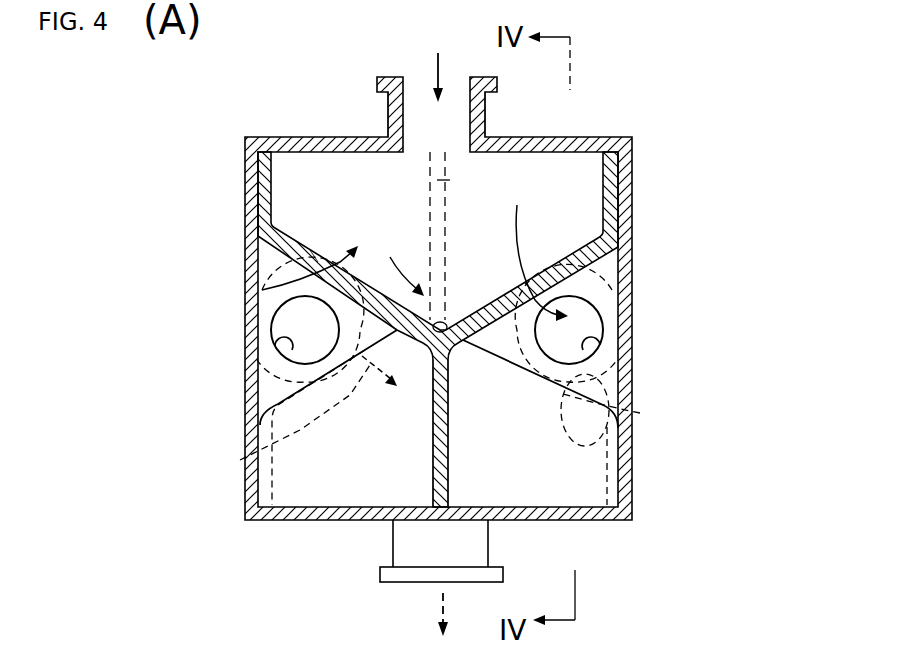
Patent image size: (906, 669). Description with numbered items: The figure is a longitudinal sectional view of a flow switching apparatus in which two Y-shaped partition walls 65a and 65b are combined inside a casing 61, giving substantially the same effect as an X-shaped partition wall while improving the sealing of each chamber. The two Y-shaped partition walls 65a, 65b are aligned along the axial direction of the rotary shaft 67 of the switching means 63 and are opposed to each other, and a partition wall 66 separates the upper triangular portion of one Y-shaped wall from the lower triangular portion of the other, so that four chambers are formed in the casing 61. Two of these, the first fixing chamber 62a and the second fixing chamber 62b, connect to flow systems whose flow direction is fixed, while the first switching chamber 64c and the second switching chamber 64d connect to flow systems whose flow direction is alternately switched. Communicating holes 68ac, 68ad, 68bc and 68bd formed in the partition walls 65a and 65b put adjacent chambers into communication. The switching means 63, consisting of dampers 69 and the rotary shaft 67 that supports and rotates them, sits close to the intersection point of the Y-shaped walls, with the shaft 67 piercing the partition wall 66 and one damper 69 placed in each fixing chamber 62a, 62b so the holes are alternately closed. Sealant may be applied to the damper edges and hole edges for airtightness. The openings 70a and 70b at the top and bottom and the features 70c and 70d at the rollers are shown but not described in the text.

The casing 61 is at (627, 217).
The first fixing chamber 62a is at (477, 233).
The second fixing chamber 62b is at (356, 485).
The switching means 63 is at (396, 258).
The first switching chamber 64c is at (268, 322).
The second switching chamber 64d is at (608, 315).
The Y-shaped partition wall 65a is at (633, 262).
The Y-shaped partition wall 65b is at (445, 180).
The partition wall 66 is at (603, 173).
The rotary shaft 67 is at (447, 322).
The communicating hole 68ac is at (262, 290).
The communicating hole 68ad is at (560, 225).
The communicating hole 68bc is at (240, 460).
The communicating hole 68bd is at (640, 413).
The damper 69 is at (323, 252).
The inlet pipe 70a is at (392, 108).
The outlet pipe 70b is at (490, 546).
The left roller shaft 70c is at (293, 343).
The right roller shaft 70d is at (596, 350).